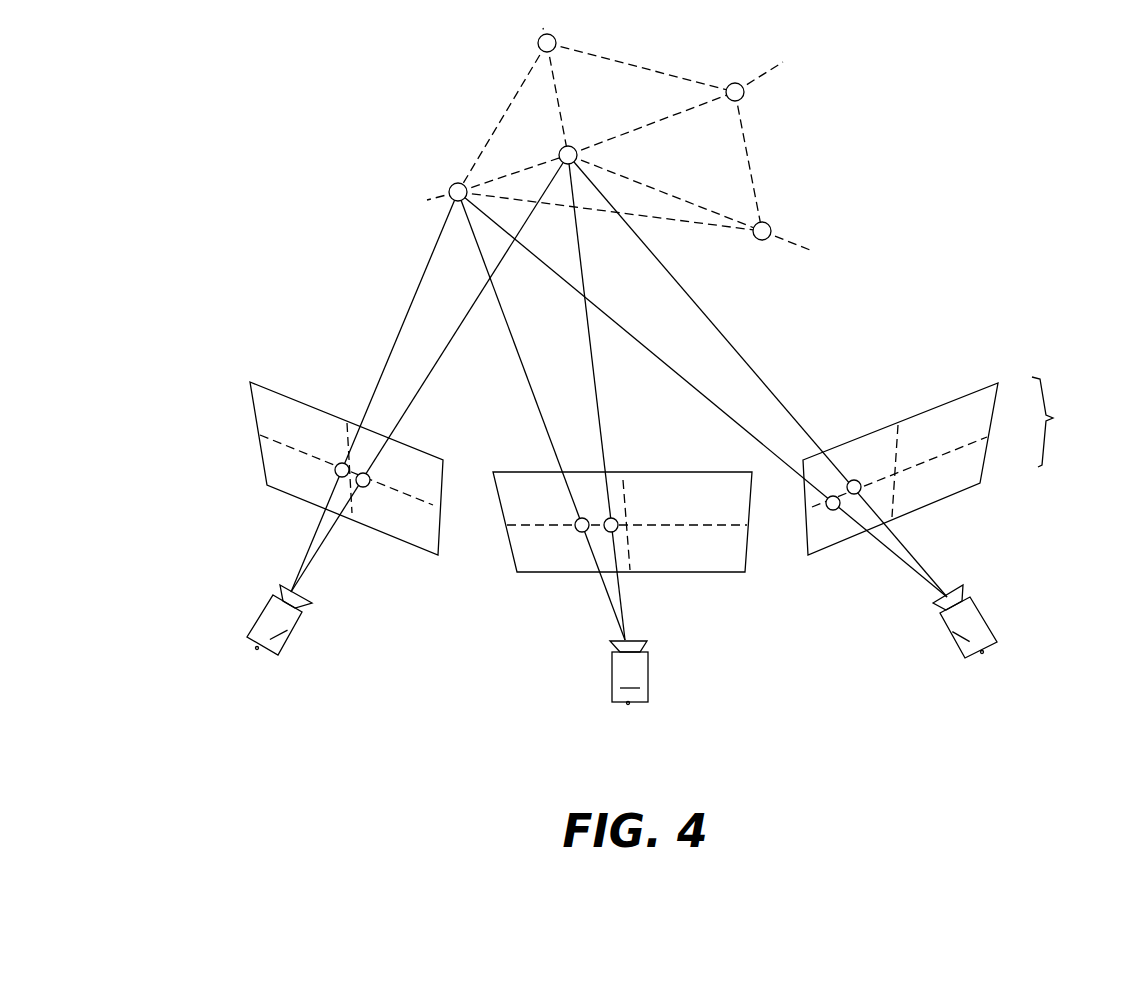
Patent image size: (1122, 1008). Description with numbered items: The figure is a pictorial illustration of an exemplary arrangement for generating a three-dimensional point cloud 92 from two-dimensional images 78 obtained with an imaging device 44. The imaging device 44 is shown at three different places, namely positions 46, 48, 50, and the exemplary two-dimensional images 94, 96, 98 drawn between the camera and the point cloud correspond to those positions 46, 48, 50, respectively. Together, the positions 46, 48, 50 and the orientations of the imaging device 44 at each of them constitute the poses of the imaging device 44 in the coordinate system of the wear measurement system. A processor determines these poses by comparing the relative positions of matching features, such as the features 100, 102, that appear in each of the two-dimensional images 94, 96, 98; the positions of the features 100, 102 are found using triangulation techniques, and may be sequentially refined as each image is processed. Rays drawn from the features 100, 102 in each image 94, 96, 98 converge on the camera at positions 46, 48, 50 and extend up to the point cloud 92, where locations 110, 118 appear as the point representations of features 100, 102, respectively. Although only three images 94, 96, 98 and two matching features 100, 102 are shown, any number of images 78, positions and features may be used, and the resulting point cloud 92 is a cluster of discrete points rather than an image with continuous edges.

The imaging device 44 is at (622, 643).
The position 46 is at (257, 648).
The position 48 is at (628, 703).
The position 50 is at (982, 652).
The 2D images 78 is at (1057, 418).
The 3D point cloud 92 is at (755, 107).
The 2D image 94 is at (277, 455).
The 2D image 96 is at (532, 548).
The 2D image 98 is at (835, 528).
The matching feature 100 is at (337, 476).
The matching feature 102 is at (364, 487).
The location 110 is at (453, 184).
The location 118 is at (571, 147).